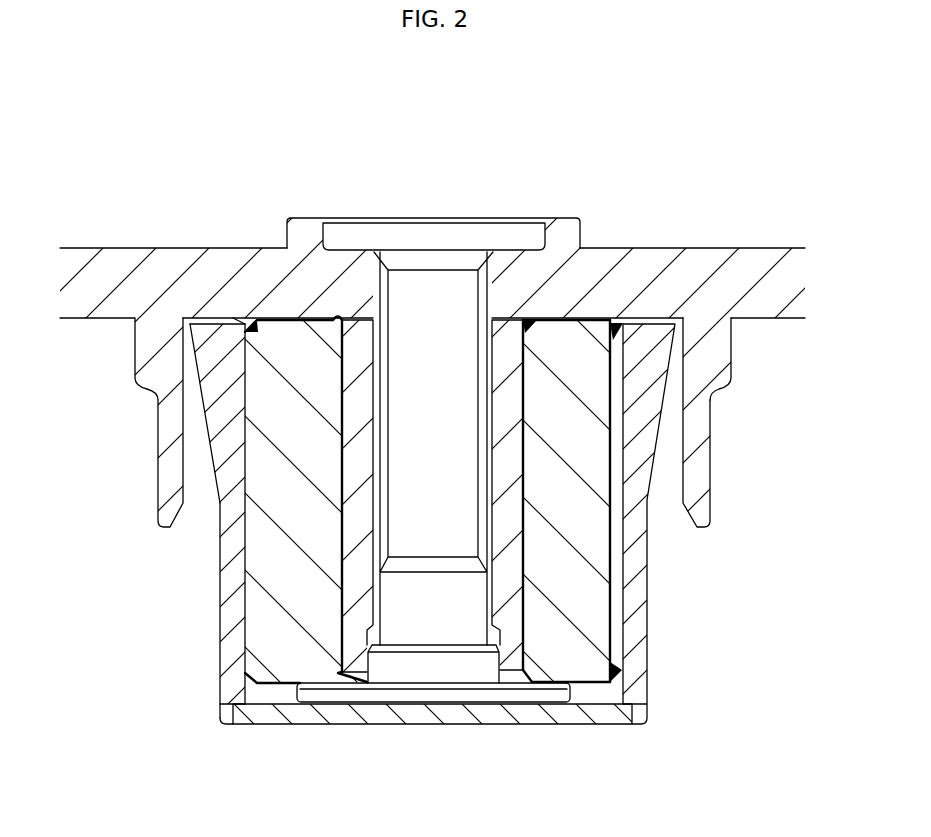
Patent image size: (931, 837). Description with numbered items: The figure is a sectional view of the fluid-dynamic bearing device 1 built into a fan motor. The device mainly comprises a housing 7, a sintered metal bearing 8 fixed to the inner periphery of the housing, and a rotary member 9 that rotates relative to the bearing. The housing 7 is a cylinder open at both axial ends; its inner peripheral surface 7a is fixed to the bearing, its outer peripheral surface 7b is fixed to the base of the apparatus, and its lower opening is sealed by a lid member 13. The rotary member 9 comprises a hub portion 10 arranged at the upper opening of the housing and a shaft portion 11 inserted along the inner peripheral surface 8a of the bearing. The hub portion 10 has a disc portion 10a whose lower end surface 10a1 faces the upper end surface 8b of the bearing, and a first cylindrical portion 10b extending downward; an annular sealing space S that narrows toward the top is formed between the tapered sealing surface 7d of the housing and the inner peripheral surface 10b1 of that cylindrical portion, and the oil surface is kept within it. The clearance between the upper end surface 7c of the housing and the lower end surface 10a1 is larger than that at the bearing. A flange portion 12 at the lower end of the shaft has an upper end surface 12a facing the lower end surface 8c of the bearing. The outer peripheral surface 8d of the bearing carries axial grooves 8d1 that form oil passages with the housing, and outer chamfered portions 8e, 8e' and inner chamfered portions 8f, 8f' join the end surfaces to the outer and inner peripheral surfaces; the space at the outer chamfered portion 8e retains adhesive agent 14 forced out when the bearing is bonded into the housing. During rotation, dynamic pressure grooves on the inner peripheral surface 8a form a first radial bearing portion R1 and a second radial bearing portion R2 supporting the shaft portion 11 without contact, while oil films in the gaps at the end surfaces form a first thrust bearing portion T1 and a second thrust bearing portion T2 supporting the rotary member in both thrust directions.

The fluid-dynamic bearing device 1 is at (257, 172).
The housing 7 is at (635, 548).
The inner peripheral surface 7a is at (245, 515).
The outer peripheral surface 7b is at (220, 627).
The upper end surface 7c is at (210, 323).
The tapered sealing surface 7d is at (210, 383).
The sintered metal bearing 8 is at (290, 635).
The inner peripheral surface 8a is at (607, 547).
The upper end surface 8b is at (315, 317).
The lower end surface 8c is at (277, 684).
The outer peripheral surface 8d is at (340, 435).
The axial grooves 8d1 is at (612, 625).
The outer chamfered portion 8e is at (639, 271).
The outer chamfered portion 8e' is at (620, 721).
The inner chamfered portion 8f is at (516, 251).
The inner chamfered portion 8f' is at (442, 726).
The rotary member 9 is at (603, 222).
The hub portion 10 is at (705, 240).
The disc portion 10a is at (290, 297).
The lower end surface 10a1 is at (293, 318).
The first cylindrical portion 10b is at (722, 362).
The inner peripheral surface 10b1 is at (682, 432).
The shaft portion 11 is at (510, 400).
The flange portion 12 is at (410, 692).
The upper end surface 12a is at (345, 690).
The lid member 13 is at (452, 716).
The adhesive agent 14 is at (237, 320).
The sealing space S is at (177, 363).
The first thrust bearing portion T1 is at (303, 303).
The second thrust bearing portion T2 is at (305, 684).
The first radial bearing portion R1 is at (332, 405).
The second radial bearing portion R2 is at (332, 578).